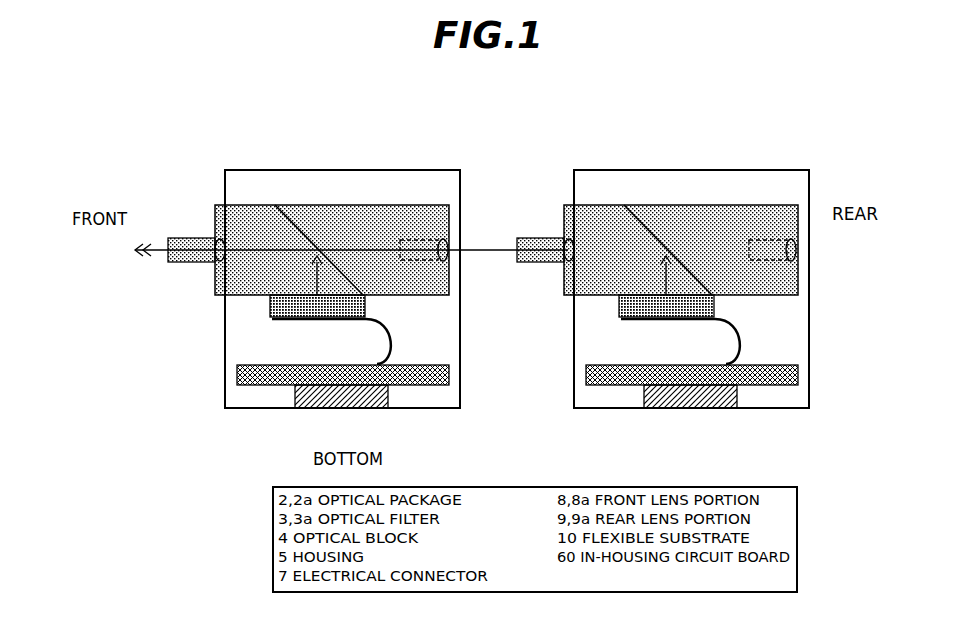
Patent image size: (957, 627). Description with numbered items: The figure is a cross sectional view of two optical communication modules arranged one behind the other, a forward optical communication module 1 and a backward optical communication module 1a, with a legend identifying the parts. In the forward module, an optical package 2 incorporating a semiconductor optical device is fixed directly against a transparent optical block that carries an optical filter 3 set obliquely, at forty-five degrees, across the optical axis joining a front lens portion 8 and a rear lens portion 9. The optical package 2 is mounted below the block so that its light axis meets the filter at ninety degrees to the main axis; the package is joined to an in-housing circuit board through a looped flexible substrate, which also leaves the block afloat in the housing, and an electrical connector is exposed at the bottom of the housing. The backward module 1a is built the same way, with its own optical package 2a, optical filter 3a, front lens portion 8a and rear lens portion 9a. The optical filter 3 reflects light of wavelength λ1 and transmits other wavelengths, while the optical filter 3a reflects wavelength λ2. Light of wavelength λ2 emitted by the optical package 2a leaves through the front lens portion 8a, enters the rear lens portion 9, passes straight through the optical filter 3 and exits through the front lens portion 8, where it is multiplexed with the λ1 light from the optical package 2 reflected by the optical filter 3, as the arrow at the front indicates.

The optical communication module 1 is at (267, 127).
The optical communication module 1a is at (608, 127).
The optical package 2 is at (272, 319).
The optical package 2a is at (620, 319).
The optical filter 3 is at (280, 209).
The optical filter 3a is at (626, 209).
The front lens portion 8 is at (216, 264).
The front lens portion 8a is at (566, 268).
The rear lens portion 9 is at (452, 246).
The rear lens portion 9a is at (800, 257).